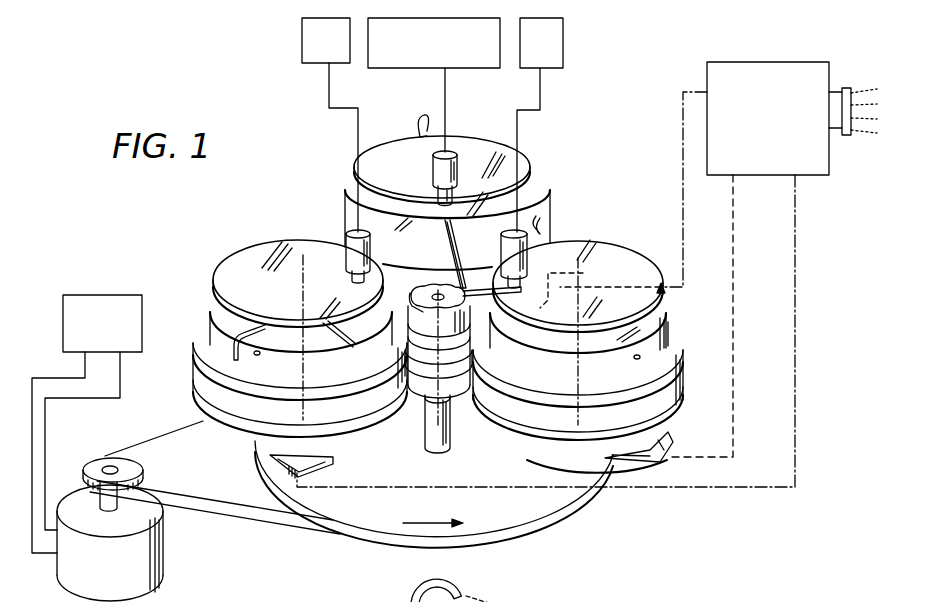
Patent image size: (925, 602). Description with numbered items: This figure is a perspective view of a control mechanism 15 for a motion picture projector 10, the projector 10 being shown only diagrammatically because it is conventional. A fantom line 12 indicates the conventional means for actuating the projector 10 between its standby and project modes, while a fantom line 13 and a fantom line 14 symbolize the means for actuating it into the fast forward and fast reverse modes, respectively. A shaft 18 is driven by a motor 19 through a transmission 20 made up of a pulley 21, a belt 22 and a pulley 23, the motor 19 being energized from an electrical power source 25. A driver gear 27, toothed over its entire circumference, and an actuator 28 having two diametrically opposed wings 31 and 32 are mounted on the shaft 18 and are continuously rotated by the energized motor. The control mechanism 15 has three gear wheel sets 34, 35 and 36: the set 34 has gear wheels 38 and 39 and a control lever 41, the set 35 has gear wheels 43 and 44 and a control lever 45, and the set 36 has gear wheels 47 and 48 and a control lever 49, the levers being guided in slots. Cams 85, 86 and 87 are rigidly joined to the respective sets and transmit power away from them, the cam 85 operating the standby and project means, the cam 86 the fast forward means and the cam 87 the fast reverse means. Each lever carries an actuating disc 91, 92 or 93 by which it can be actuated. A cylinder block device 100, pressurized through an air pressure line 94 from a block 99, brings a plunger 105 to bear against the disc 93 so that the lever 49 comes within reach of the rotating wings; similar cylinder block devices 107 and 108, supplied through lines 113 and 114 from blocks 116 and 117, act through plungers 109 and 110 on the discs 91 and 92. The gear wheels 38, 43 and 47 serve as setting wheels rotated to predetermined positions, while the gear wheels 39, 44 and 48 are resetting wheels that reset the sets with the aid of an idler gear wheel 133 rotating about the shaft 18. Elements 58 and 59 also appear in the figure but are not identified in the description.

The motion picture projector 10 is at (755, 62).
The fantom line 12 is at (683, 173).
The fantom line 13 is at (795, 222).
The fantom line 14 is at (733, 258).
The control apparatus 15 is at (593, 206).
The shaft 18 is at (416, 450).
The motor 19 is at (163, 545).
The transmission 20 is at (170, 458).
The pulley 21 is at (97, 462).
The belt 22 is at (255, 522).
The pulley 23 is at (575, 500).
The electrical power source 25 is at (108, 294).
The driver gear 27 is at (426, 440).
The actuator 28 is at (388, 352).
The wing 31 is at (422, 317).
The wing 32 is at (490, 294).
The gear wheel set 34 is at (352, 173).
The gear wheel set 35 is at (213, 296).
The gear wheel set 36 is at (664, 305).
The gear wheel 38 is at (348, 206).
The gear wheel 39 is at (545, 203).
The control lever 41 is at (448, 258).
The gear wheel 43 is at (197, 368).
The gear wheel 44 is at (197, 403).
The control lever 45 is at (252, 328).
The gear wheel 47 is at (683, 370).
The gear wheel 48 is at (683, 407).
The control lever 49 is at (487, 350).
The link rod 58 is at (467, 280).
The pawl 59 is at (418, 130).
The cam 85 is at (583, 273).
The cam 86 is at (262, 470).
The cam 87 is at (672, 438).
The actuating disc 91 is at (478, 143).
The actuating disc 92 is at (255, 247).
The actuating disc 93 is at (632, 258).
The air pressure line 94 is at (519, 126).
The block 99 is at (566, 43).
The cylinder block device 100 is at (530, 232).
The plunger 105 is at (548, 270).
The cylinder block device 107 is at (432, 170).
The cylinder block device 108 is at (346, 250).
The plunger 109 is at (438, 196).
The plunger 110 is at (352, 278).
The air pressure line 113 is at (446, 92).
The air pressure line 114 is at (329, 92).
The block 116 is at (420, 69).
The block 117 is at (302, 40).
The idler gear wheel 133 is at (456, 425).